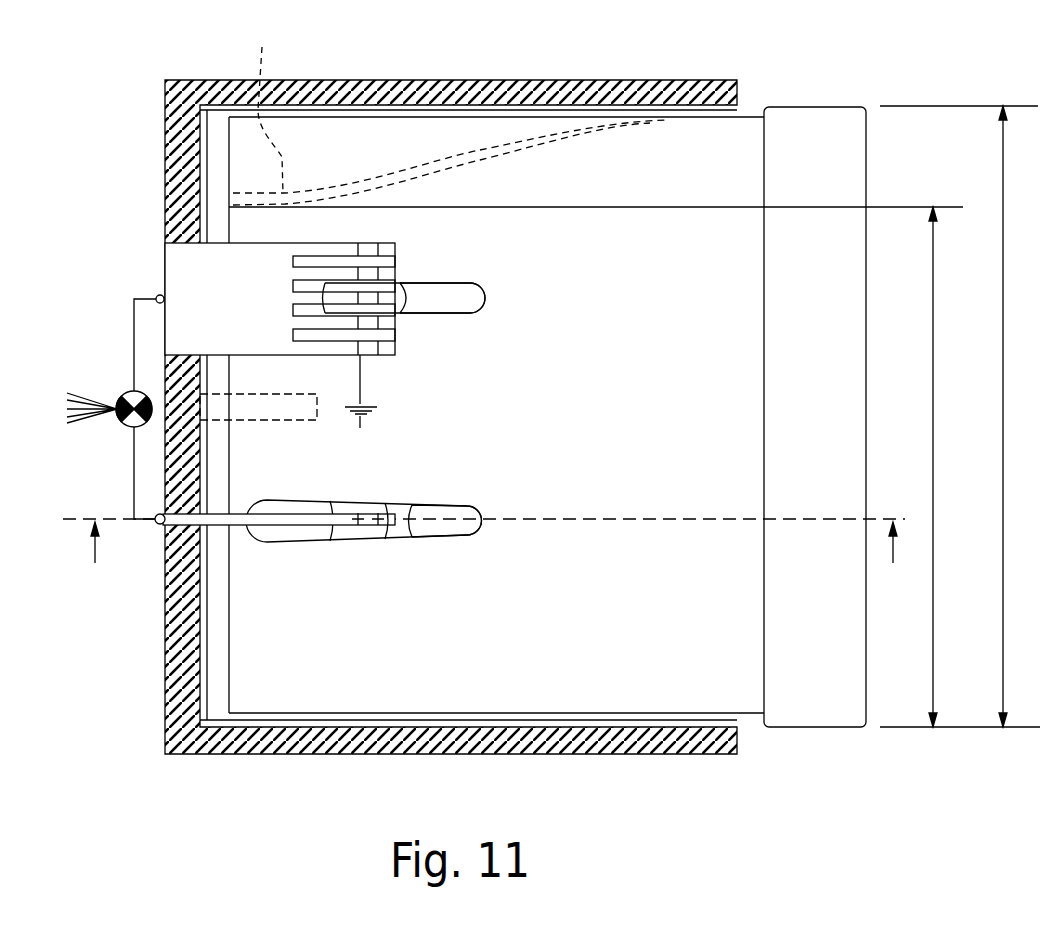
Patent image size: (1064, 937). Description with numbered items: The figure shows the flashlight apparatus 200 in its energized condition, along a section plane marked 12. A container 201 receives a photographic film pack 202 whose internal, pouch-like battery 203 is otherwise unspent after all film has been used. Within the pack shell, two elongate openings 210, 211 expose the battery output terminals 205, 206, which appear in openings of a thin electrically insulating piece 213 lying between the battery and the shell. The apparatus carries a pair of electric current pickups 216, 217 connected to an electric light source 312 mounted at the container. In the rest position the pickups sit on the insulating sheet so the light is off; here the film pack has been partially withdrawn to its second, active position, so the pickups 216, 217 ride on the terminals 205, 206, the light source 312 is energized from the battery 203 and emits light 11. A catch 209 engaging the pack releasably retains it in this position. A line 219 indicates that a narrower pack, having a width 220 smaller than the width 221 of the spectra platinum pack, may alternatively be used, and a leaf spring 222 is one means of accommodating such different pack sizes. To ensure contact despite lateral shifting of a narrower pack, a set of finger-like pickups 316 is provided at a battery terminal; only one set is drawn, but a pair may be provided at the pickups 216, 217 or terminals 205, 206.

The electric light 11 is at (83, 395).
The section line 12 is at (484, 558).
The apparatus 200 is at (152, 142).
The container 201 is at (643, 755).
The photographic film pack 202 is at (617, 633).
The battery 203 is at (365, 404).
The battery output terminal 205 is at (400, 287).
The battery output terminal 206 is at (347, 537).
The catch 209 is at (293, 420).
The elongate opening 210 is at (480, 297).
The elongate opening 211 is at (483, 520).
The electrically insulating piece 213 is at (447, 297).
The electric current pickup 216 is at (385, 297).
The electric current pickup 217 is at (388, 537).
The line 219 is at (673, 207).
The width 220 is at (933, 415).
The width 221 is at (1003, 167).
The leaf spring 222 is at (450, 111).
The electric light source 312 is at (122, 425).
The set of finger-like pickups 316 is at (338, 230).